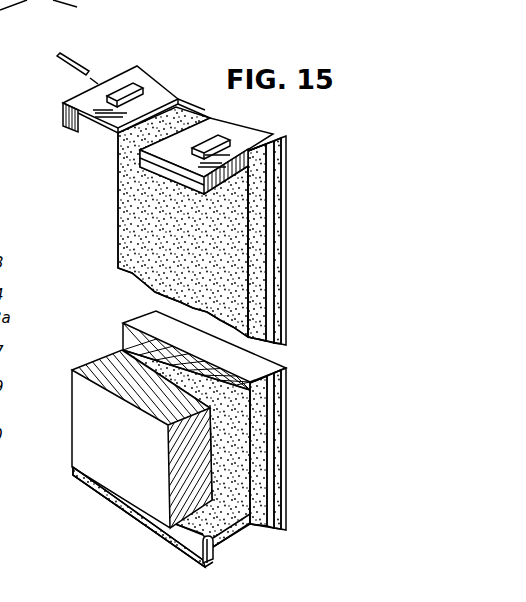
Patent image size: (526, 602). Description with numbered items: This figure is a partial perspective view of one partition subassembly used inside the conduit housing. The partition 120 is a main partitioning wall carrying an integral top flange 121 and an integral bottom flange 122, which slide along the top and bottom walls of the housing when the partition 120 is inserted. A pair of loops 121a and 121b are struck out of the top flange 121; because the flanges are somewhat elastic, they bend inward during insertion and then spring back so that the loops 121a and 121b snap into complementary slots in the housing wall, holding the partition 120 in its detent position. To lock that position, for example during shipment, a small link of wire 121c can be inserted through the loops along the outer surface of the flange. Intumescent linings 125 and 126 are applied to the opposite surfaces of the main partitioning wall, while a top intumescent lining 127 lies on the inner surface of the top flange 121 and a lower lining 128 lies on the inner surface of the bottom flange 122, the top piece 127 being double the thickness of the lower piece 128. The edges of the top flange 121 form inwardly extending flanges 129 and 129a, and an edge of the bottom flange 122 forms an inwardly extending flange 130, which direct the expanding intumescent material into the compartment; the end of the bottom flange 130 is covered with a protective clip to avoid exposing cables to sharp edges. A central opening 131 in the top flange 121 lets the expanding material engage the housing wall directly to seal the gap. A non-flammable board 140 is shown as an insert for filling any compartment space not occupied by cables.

The partition 120 is at (284, 290).
The top flange 121 is at (150, 100).
The loop 121a is at (212, 128).
The loop 121b is at (121, 90).
The link of wire 121c is at (62, 66).
The bottom flange 122 is at (220, 558).
The intumescent lining 125 is at (287, 407).
The intumescent lining 126 is at (243, 460).
The intumescent lining 127 is at (118, 197).
The intumescent lining 128 is at (127, 505).
The inwardly extending flange 129 is at (250, 193).
The inwardly extending flange 129a is at (78, 128).
The inwardly extending flange 130 is at (175, 538).
The central opening 131 is at (170, 106).
The non-flammable board 140 is at (70, 447).